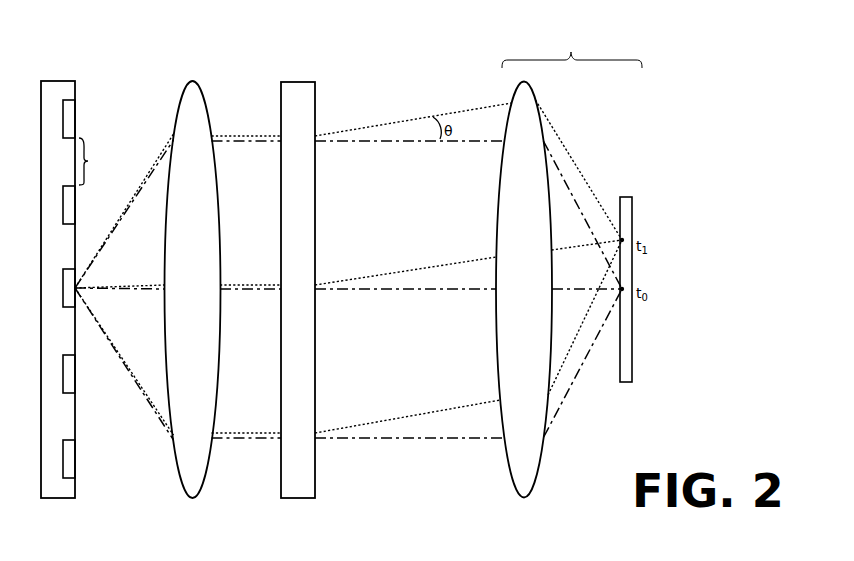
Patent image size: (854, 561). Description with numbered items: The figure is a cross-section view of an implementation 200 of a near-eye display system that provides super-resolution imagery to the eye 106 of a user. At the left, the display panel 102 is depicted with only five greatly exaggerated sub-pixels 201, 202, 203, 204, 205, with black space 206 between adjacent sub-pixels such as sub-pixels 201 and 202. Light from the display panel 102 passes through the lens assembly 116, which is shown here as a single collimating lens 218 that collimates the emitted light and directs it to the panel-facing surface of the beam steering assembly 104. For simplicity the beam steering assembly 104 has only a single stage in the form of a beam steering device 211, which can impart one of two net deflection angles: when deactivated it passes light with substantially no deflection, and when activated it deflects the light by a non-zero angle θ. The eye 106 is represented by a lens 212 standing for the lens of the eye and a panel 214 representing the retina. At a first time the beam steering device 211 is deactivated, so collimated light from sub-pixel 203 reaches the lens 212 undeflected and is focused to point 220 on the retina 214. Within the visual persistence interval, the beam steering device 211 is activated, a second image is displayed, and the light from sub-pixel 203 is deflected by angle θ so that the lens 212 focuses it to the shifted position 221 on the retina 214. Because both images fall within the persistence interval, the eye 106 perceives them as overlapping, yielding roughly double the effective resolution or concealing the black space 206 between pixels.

The display panel 102 is at (48, 81).
The sub-pixel 201 is at (77, 120).
The sub-pixel 202 is at (77, 202).
The sub-pixel 203 is at (77, 284).
The sub-pixel 204 is at (77, 386).
The sub-pixel 205 is at (77, 463).
The black space 206 is at (100, 161).
The lens assembly 116 is at (201, 70).
The collimating lens 218 is at (196, 291).
The beam steering assembly 104 is at (311, 70).
The beam steering device 211 is at (293, 500).
The implementation 200 is at (414, 73).
The eye 106 is at (572, 48).
The lens 212 is at (523, 303).
The retina 214 is at (625, 314).
The point 220 is at (624, 291).
The position 221 is at (624, 240).